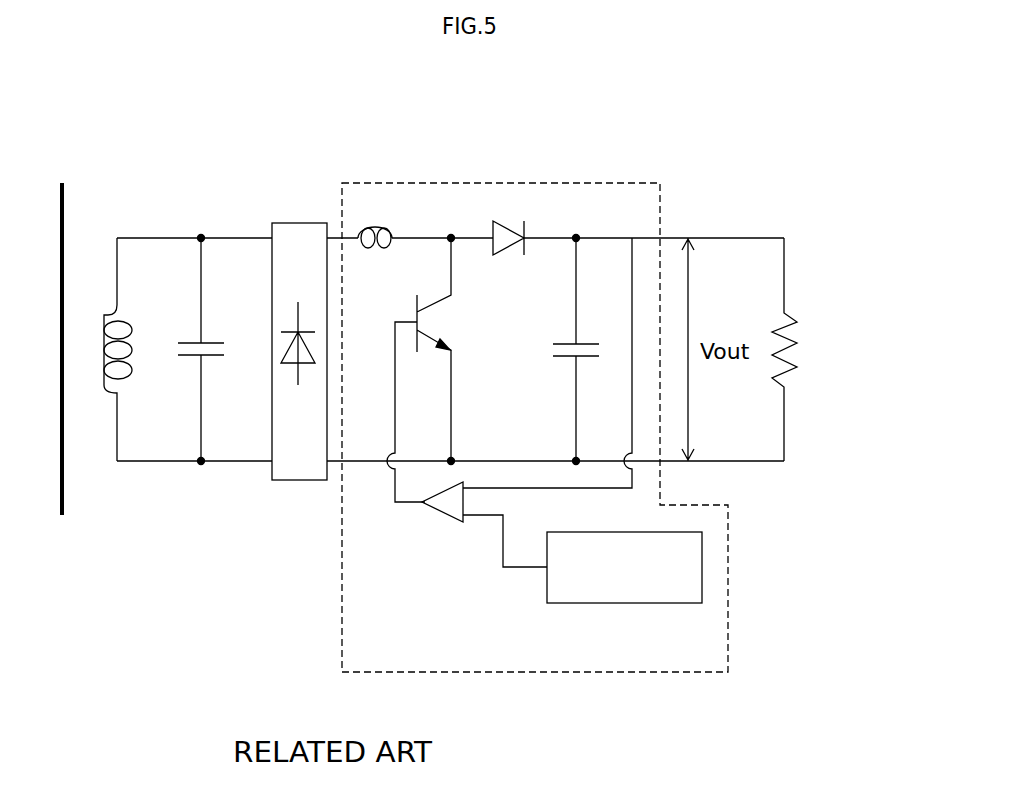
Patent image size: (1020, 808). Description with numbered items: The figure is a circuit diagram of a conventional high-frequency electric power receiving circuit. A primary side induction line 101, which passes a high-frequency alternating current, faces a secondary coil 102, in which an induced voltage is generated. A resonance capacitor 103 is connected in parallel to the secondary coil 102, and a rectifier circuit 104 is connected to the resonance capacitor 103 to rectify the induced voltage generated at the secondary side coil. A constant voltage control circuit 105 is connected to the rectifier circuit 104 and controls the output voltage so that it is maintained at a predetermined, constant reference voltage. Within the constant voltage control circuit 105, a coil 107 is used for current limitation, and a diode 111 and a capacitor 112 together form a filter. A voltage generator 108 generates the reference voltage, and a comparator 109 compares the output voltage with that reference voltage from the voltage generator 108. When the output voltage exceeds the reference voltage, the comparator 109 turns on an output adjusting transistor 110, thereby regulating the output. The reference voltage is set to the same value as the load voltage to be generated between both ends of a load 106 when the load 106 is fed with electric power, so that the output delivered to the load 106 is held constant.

The primary side induction line 101 is at (67, 198).
The secondary coil 102 is at (120, 325).
The resonance capacitor 103 is at (206, 343).
The rectifier circuit 104 is at (296, 223).
The constant voltage control circuit 105 is at (635, 183).
The load 106 is at (797, 337).
The coil 107 is at (392, 228).
The voltage generator 108 is at (602, 532).
The comparator 109 is at (439, 514).
The output adjusting transistor 110 is at (447, 323).
The diode 111 is at (527, 226).
The capacitor 112 is at (580, 344).